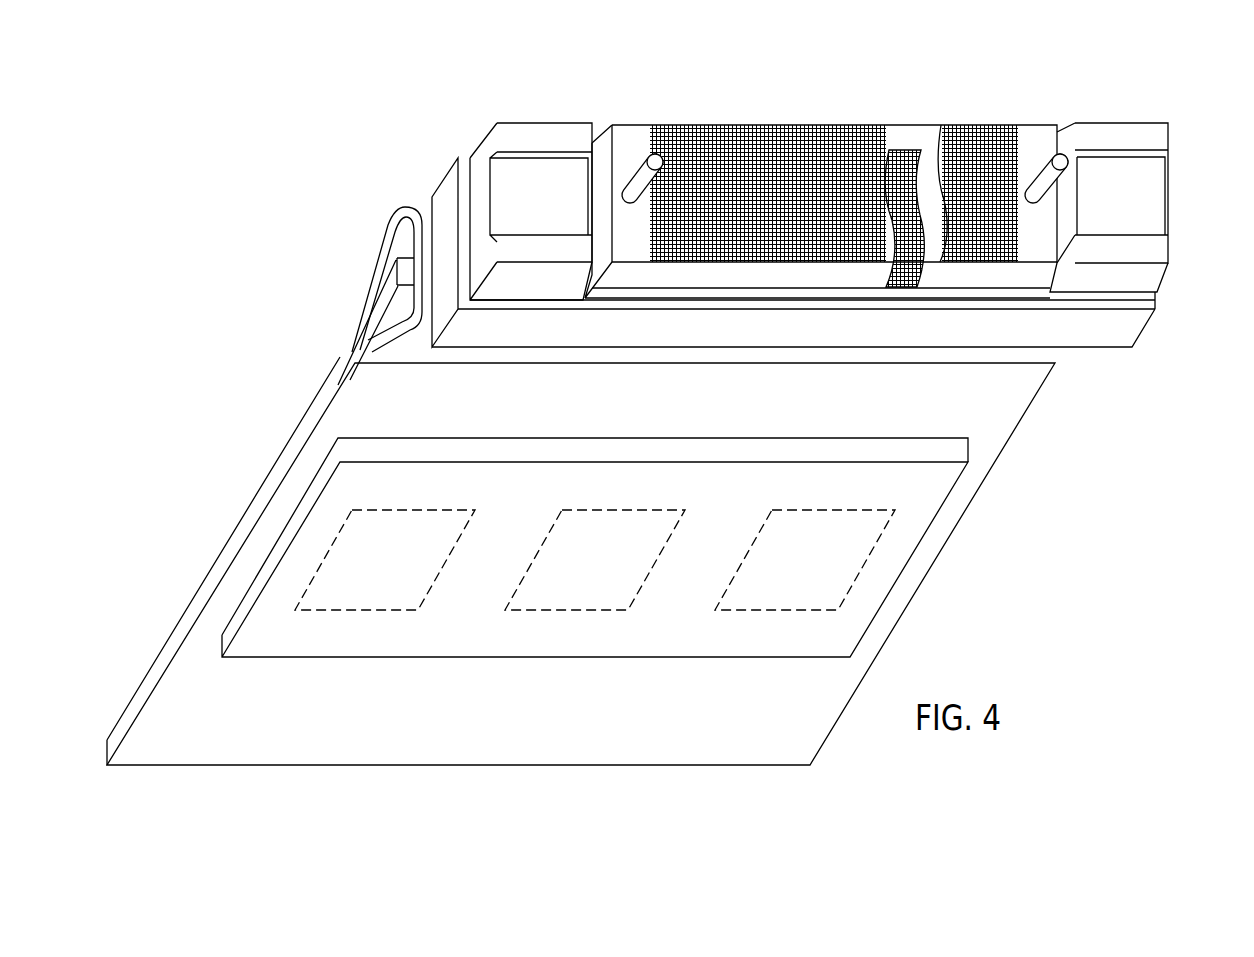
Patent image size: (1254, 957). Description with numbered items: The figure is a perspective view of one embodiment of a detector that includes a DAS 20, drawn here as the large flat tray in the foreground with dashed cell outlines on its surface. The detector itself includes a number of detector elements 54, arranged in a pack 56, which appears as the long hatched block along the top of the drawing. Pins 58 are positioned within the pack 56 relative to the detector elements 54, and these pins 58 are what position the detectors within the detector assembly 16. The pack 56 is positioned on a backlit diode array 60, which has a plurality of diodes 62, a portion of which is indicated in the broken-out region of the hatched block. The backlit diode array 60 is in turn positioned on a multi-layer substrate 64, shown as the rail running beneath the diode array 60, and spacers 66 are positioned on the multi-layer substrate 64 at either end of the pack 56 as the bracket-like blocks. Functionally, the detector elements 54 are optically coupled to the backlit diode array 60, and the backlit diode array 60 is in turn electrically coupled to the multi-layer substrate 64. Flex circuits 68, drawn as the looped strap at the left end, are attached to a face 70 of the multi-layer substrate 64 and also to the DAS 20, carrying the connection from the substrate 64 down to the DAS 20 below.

The detector assembly 16 is at (1070, 97).
The DAS 20 is at (947, 522).
The detector elements 54 is at (737, 132).
The pack 56 is at (650, 107).
The pins 58 is at (648, 153).
The backlit diode array 60 is at (1022, 297).
The diodes 62 is at (902, 150).
The multi-layer substrate 64 is at (1130, 327).
The spacers 66 is at (536, 130).
The flex circuits 68 is at (372, 332).
The face 70 is at (430, 205).